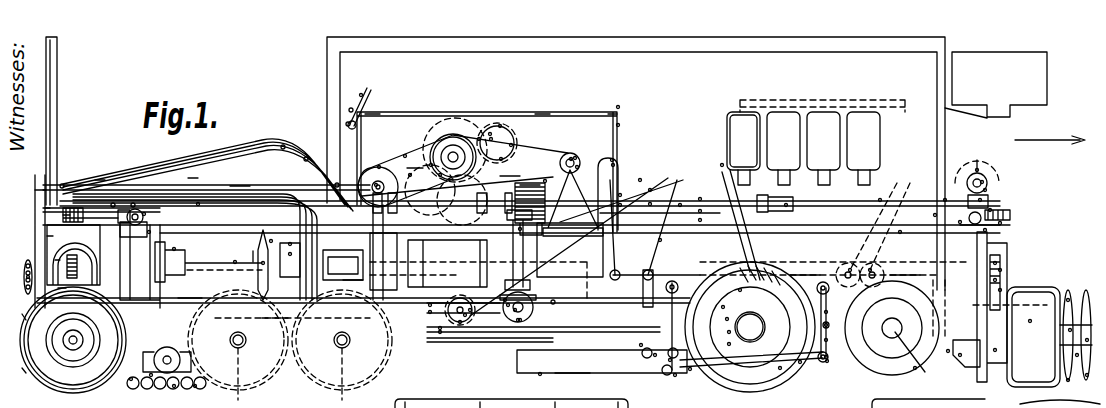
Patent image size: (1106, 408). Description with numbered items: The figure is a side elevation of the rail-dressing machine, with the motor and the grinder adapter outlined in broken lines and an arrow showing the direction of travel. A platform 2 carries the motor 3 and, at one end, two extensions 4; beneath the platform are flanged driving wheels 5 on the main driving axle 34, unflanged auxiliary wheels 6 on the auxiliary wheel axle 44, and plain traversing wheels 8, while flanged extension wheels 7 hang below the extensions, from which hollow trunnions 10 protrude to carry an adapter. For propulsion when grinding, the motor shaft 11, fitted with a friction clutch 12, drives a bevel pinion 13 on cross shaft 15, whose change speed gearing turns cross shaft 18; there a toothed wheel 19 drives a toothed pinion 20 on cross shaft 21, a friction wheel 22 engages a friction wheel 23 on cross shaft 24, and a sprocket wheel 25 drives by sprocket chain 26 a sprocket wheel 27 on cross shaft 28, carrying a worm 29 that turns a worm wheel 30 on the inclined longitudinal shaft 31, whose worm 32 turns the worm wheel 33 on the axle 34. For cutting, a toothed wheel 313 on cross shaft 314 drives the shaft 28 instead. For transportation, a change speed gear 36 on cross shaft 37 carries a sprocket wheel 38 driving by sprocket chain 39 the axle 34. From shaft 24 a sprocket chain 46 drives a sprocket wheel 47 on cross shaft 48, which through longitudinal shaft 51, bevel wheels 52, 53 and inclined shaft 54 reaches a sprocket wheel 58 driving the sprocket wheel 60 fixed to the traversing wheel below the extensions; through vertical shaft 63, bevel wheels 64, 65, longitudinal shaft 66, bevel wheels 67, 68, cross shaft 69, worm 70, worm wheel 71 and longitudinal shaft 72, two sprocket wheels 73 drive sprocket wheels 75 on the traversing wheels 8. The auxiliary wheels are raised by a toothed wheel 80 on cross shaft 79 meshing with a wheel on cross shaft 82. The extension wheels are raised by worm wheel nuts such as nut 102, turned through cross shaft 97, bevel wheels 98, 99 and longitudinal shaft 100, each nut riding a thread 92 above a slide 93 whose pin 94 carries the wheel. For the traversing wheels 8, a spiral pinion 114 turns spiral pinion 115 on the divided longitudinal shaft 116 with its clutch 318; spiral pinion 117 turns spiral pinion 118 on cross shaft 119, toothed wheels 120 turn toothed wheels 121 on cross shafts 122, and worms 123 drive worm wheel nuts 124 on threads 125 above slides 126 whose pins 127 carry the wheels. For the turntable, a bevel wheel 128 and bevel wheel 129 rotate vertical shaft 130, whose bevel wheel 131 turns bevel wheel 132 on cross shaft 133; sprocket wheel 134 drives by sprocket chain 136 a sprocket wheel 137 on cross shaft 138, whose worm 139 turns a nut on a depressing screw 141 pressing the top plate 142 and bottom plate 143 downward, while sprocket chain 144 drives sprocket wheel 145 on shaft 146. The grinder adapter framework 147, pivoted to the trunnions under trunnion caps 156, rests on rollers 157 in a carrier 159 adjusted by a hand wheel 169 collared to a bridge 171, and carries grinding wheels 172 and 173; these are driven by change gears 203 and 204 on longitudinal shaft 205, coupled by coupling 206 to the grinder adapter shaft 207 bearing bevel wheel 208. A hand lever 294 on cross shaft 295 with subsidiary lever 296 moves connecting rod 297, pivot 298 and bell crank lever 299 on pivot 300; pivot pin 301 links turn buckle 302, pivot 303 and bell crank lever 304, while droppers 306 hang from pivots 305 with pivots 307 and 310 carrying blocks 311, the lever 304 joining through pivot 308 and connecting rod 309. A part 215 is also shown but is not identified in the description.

The frame rod 2 is at (855, 262).
The cylinders 3 is at (796, 141).
The conveyor bar 4 is at (240, 174).
The drive wheel 5 is at (800, 185).
The cam wheel 6 is at (892, 328).
The front wheel 7 is at (73, 340).
The drum 8 is at (1033, 337).
The block 10 is at (252, 250).
The rod 11 is at (701, 219).
The shaft 12 is at (621, 204).
The gear 13 is at (502, 158).
The gear 15 is at (490, 133).
The gear 18 is at (478, 138).
The gear 19 is at (452, 142).
The pulley 20 is at (376, 184).
The gear 21 is at (415, 160).
The gear 22 is at (410, 174).
The belt 23 is at (431, 163).
The gear 24 is at (440, 174).
The gear 25 is at (500, 125).
The pulley 26 is at (576, 157).
The pulley 27 is at (578, 166).
The plate 28 is at (613, 159).
The plate 29 is at (614, 164).
The rod 30 is at (641, 179).
The rod 31 is at (651, 189).
The rod 32 is at (722, 164).
The bar 33 is at (800, 363).
The hub 34 is at (750, 327).
The bar 36 is at (510, 168).
The lever 37 is at (621, 194).
The lever 38 is at (572, 158).
The lever 39 is at (661, 239).
The pin 44 is at (916, 369).
The belt 46 is at (405, 155).
The conveyor belt 47 is at (305, 158).
The conveyor belt 48 is at (336, 184).
The conveyor 51 is at (100, 180).
The bracket 52 is at (62, 185).
The bracket 53 is at (34, 192).
The worm gear 54 is at (62, 218).
The roller 58 is at (24, 278).
The pin 60 is at (22, 317).
The band 63 is at (290, 243).
The bar 64 is at (429, 313).
The bar 65 is at (429, 305).
The bearing 66 is at (934, 214).
The gear 67 is at (996, 263).
The gear 68 is at (1001, 270).
The gear 69 is at (996, 280).
The bracket 70 is at (961, 356).
The bracket 71 is at (948, 352).
The sprocket 72 is at (1031, 320).
The sprocket 73 is at (1068, 299).
The sprocket 75 is at (1088, 375).
The rod 79 is at (900, 231).
The rod 80 is at (851, 269).
The rod 82 is at (871, 269).
The spring 92 is at (44, 210).
The plate 93 is at (57, 290).
The axle 94 is at (72, 340).
The bearing 97 is at (145, 214).
The bearing 98 is at (150, 232).
The post 99 is at (133, 204).
The post 100 is at (113, 204).
The housing 102 is at (47, 238).
The conveyor belt 114 is at (282, 146).
The rod 115 is at (198, 205).
The shaft 116 is at (379, 166).
The shaft 117 is at (944, 199).
The gear 118 is at (983, 181).
The gear 119 is at (986, 189).
The gear 120 is at (977, 169).
The gear 121 is at (981, 200).
The gear 122 is at (959, 222).
The gear 123 is at (986, 230).
The worm 124 is at (1001, 223).
The gear 125 is at (991, 210).
The gear 126 is at (1001, 290).
The plate 127 is at (995, 351).
The gear 128 is at (531, 182).
The bearing 129 is at (519, 228).
The gear 130 is at (460, 323).
The gear 131 is at (465, 316).
The gear 132 is at (518, 321).
The rod 133 is at (514, 311).
The rod 134 is at (507, 306).
The rod 136 is at (519, 321).
The rod 137 is at (504, 301).
The rod 138 is at (469, 311).
The axle 139 is at (239, 350).
The bar 141 is at (439, 329).
The bar 142 is at (439, 333).
The plate 143 is at (572, 360).
The plate 144 is at (539, 375).
The ratchet 145 is at (722, 308).
The ratchet 146 is at (726, 320).
The frame 147 is at (190, 290).
The rod 156 is at (270, 240).
The roller 157 is at (174, 388).
The roller 159 is at (196, 388).
The roller 169 is at (150, 376).
The bracket 171 is at (130, 380).
The wheel 172 is at (238, 340).
The wheel 173 is at (342, 340).
The rod 203 is at (546, 180).
The bolt 204 is at (553, 303).
The box 205 is at (354, 278).
The block 206 is at (290, 252).
The plate 207 is at (262, 262).
The rod 208 is at (234, 262).
The frame 215 is at (275, 309).
The lever 294 is at (362, 94).
The lever 295 is at (347, 124).
The lever 296 is at (350, 110).
The frame 297 is at (372, 112).
The frame 298 is at (619, 106).
The frame 299 is at (619, 124).
The rod 300 is at (651, 203).
The rod 301 is at (681, 204).
The link 302 is at (640, 346).
The link 303 is at (654, 356).
The link 304 is at (669, 361).
The link 305 is at (700, 210).
The link 306 is at (739, 291).
The link 307 is at (828, 362).
The link 308 is at (675, 376).
The link 309 is at (781, 369).
The link 310 is at (728, 345).
The link 311 is at (728, 333).
The gear 313 is at (492, 138).
The gear 314 is at (512, 144).
The coupling 318 is at (787, 204).